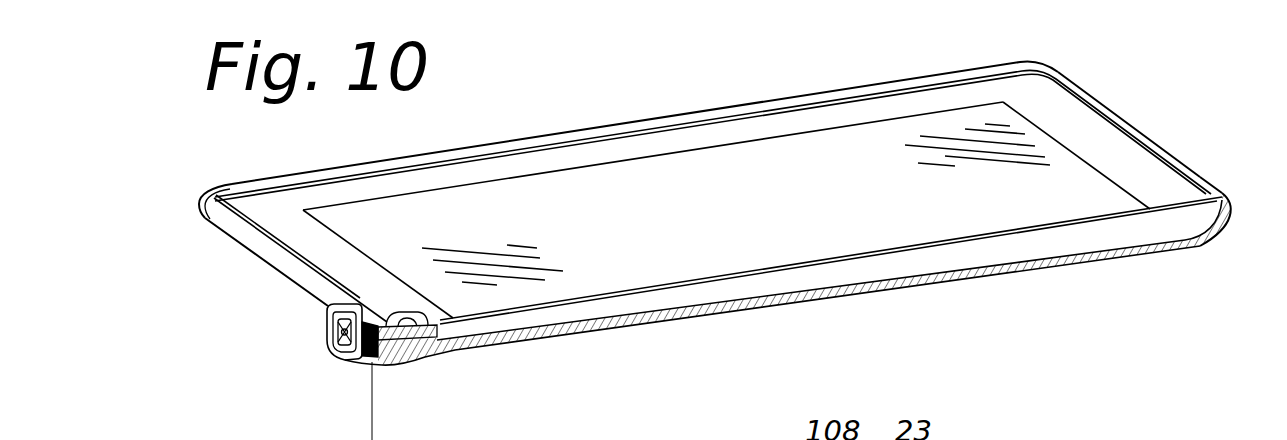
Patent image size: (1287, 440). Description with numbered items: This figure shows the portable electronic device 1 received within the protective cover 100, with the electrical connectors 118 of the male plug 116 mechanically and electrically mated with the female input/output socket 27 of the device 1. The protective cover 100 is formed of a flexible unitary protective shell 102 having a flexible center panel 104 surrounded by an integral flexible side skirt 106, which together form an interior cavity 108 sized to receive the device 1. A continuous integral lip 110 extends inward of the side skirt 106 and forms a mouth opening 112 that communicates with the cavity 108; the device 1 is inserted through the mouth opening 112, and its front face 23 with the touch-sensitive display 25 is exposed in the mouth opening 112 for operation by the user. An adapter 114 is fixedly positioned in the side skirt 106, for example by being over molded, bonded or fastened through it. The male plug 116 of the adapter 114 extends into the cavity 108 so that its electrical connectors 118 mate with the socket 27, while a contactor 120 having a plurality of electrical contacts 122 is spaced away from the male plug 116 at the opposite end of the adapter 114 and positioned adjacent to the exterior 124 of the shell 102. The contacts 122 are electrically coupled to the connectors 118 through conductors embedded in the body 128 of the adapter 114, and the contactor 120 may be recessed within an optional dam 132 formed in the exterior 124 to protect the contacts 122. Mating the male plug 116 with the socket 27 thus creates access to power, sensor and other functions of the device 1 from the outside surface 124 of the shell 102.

The portable electronic device 1 is at (876, 273).
The front face 23 is at (829, 118).
The display 25 is at (806, 232).
The female input/output socket 27 is at (418, 339).
The protective cover 100 is at (558, 131).
The flexible unitary protective shell 102 is at (1076, 86).
The flexible center panel 104 is at (986, 278).
The flexible side skirt 106 is at (1204, 238).
The interior cavity 108 is at (1131, 241).
The continuous integral lip 110 is at (262, 183).
The mouth opening 112 is at (1193, 205).
The adapter 114 is at (368, 359).
The male plug 116 is at (405, 345).
The electrical connectors 118 is at (393, 314).
The contactor 120 is at (328, 347).
The electrical contacts 122 is at (340, 357).
The exterior 124 is at (262, 263).
The body 128 is at (377, 360).
The dam 132 is at (327, 329).